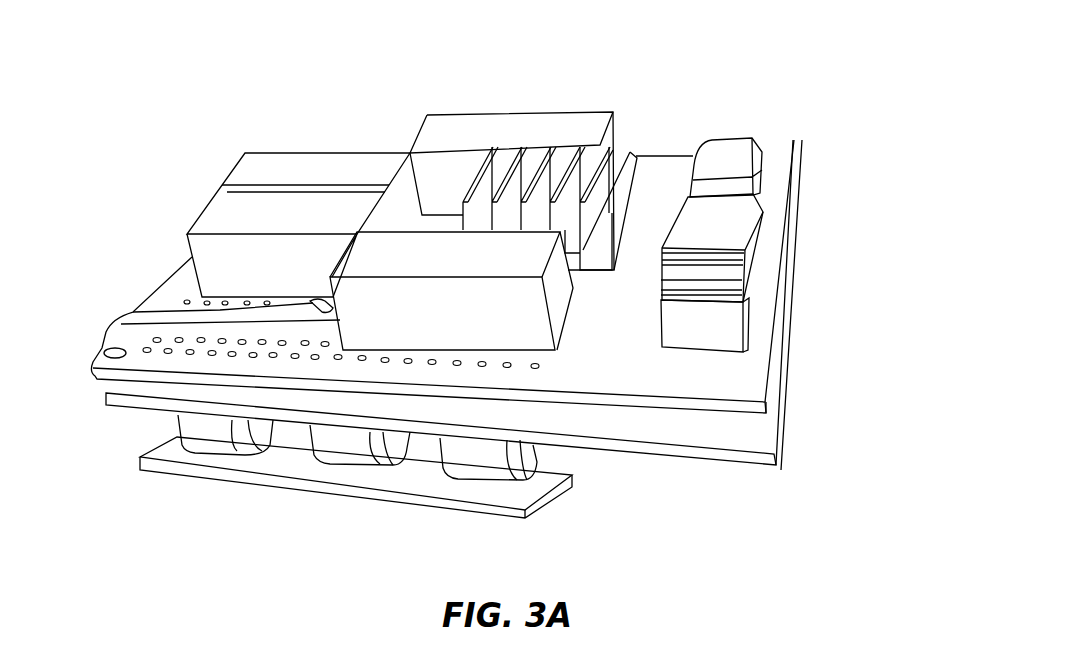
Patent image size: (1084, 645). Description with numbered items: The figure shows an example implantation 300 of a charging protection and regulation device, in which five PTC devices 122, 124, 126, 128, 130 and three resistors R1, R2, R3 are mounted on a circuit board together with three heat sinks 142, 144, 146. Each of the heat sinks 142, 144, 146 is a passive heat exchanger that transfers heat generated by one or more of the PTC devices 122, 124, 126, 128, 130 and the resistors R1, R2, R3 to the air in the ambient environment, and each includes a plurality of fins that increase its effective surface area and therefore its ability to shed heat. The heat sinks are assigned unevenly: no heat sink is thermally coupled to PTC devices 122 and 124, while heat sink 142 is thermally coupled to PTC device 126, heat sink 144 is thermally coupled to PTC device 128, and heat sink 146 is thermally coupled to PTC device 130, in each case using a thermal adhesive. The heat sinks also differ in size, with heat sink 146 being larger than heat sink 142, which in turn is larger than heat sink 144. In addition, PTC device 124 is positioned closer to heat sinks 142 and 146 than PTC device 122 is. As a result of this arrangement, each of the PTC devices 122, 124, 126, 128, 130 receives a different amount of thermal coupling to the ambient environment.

The example implantation 300 is at (813, 70).
The resistor R1 is at (437, 320).
The resistor R2 is at (503, 118).
The resistor R3 is at (334, 165).
The PTC device 122 is at (755, 152).
The PTC device 124 is at (757, 182).
The PTC device 126 is at (747, 263).
The PTC device 128 is at (773, 343).
The PTC device 130 is at (595, 262).
The heat sink 142 is at (760, 226).
The heat sink 144 is at (727, 307).
The heat sink 146 is at (636, 152).